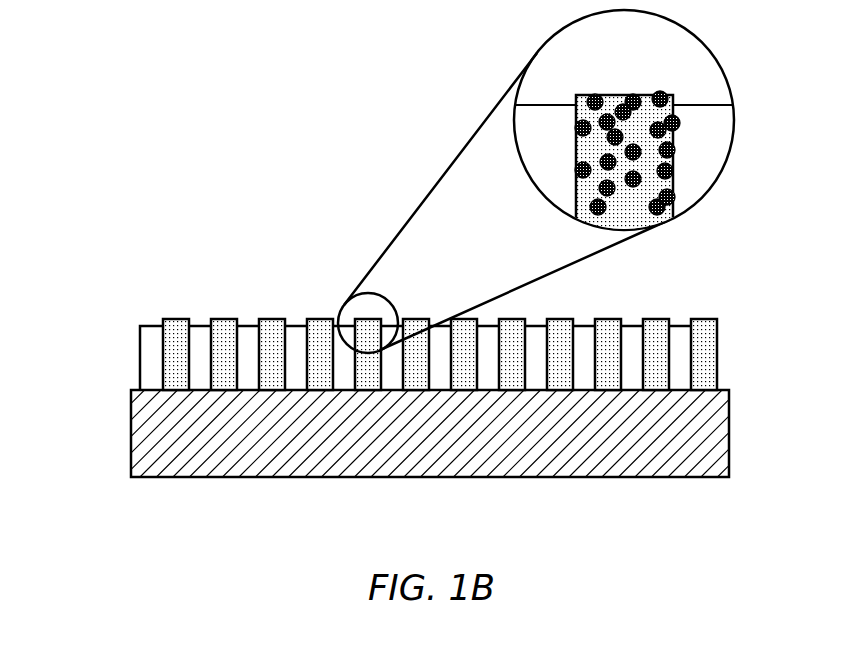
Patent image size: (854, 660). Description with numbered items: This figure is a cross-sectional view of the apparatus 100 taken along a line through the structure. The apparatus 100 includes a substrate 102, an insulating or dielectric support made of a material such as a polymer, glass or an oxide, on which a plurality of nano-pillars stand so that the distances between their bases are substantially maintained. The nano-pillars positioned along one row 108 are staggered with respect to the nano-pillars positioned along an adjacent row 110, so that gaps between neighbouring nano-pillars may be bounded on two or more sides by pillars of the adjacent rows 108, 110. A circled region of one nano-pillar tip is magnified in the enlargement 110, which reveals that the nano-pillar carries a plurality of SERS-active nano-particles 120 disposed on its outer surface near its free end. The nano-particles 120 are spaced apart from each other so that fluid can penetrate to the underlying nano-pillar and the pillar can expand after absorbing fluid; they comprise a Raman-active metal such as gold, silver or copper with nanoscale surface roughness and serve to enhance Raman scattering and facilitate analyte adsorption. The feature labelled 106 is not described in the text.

The apparatus 100 is at (150, 124).
The substrate 102 is at (729, 419).
The nanostructures (pillars) 106 is at (157, 374).
The row 108 is at (136, 333).
The adjacent row 110 is at (523, 70).
The SERS-active nano-particles 120 is at (680, 127).